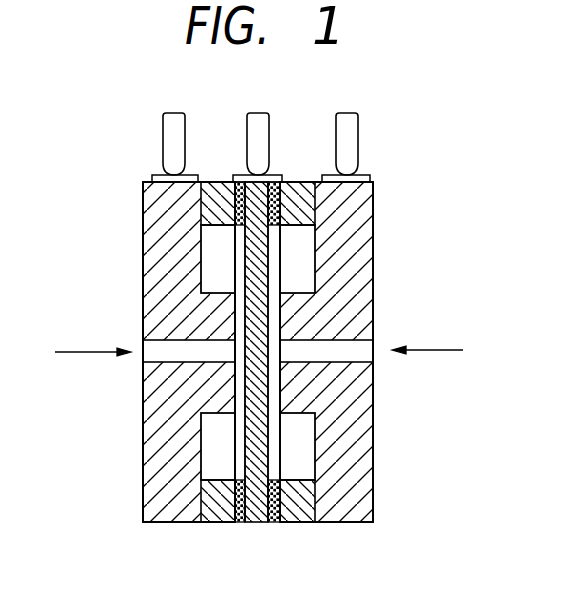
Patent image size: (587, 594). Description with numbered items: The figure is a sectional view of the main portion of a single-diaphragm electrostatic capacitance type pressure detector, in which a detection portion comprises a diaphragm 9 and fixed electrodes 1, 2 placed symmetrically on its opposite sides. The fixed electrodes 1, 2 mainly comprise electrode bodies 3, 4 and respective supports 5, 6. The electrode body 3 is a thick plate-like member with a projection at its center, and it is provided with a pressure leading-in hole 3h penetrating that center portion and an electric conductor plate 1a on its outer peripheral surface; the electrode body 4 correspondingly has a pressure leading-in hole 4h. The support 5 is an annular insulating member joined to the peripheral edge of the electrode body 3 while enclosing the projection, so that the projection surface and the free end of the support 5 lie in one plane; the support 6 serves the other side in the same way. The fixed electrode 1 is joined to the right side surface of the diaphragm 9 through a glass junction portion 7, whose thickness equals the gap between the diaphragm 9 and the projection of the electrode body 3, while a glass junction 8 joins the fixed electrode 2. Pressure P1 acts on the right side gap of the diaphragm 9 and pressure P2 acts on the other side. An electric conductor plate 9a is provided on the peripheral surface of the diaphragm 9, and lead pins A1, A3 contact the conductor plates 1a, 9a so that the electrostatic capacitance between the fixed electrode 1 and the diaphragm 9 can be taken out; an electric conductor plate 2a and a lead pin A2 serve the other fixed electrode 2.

The fixed electrode 1 is at (388, 476).
The fixed electrode 2 is at (128, 479).
The electrode body 3 is at (372, 268).
The electrode body 4 is at (147, 277).
The pressure leading-in hole 3h is at (340, 367).
The pressure leading-in hole 4h is at (172, 370).
The support 5 is at (307, 217).
The support 6 is at (202, 213).
The glass junction portion 7 is at (317, 200).
The glass junction 8 is at (235, 202).
The diaphragm 9 is at (253, 522).
The electric conductor plate 1a is at (363, 175).
The electric conductor plate 2a is at (190, 175).
The electric conductor plate 9a is at (273, 175).
The lead pin A1 is at (345, 112).
The lead pin A2 is at (171, 112).
The lead pin A3 is at (257, 112).
The pressure P1 is at (441, 353).
The pressure P2 is at (79, 353).